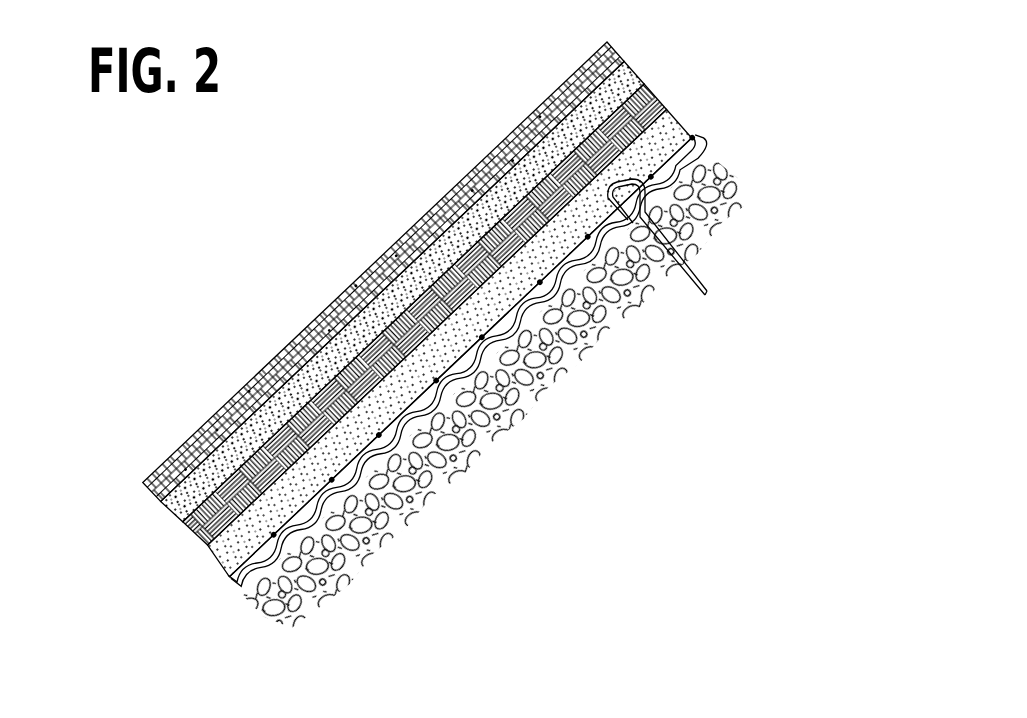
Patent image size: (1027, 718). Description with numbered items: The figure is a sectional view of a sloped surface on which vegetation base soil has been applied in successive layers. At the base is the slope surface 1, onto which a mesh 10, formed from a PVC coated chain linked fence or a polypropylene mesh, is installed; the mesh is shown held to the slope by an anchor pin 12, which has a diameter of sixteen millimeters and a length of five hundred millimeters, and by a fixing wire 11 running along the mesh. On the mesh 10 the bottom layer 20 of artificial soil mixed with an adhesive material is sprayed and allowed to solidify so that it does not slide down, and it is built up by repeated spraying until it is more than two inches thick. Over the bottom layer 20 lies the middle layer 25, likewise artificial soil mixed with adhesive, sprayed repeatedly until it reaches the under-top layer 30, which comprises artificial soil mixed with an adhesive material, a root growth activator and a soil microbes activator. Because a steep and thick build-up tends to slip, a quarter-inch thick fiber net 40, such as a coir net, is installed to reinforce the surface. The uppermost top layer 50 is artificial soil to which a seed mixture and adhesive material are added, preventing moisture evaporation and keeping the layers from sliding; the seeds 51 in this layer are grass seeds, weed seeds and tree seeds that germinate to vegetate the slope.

The slope surface 1 is at (604, 346).
The mesh 10 is at (229, 583).
The fixing wire 11 is at (272, 533).
The anchor pin 12 is at (702, 242).
The bottom layer 20 is at (675, 109).
The middle layer 25 is at (652, 85).
The under-top layer 30 is at (633, 64).
The fiber net 40 is at (160, 500).
The top layer 50 is at (617, 46).
The seeds 51 is at (263, 361).